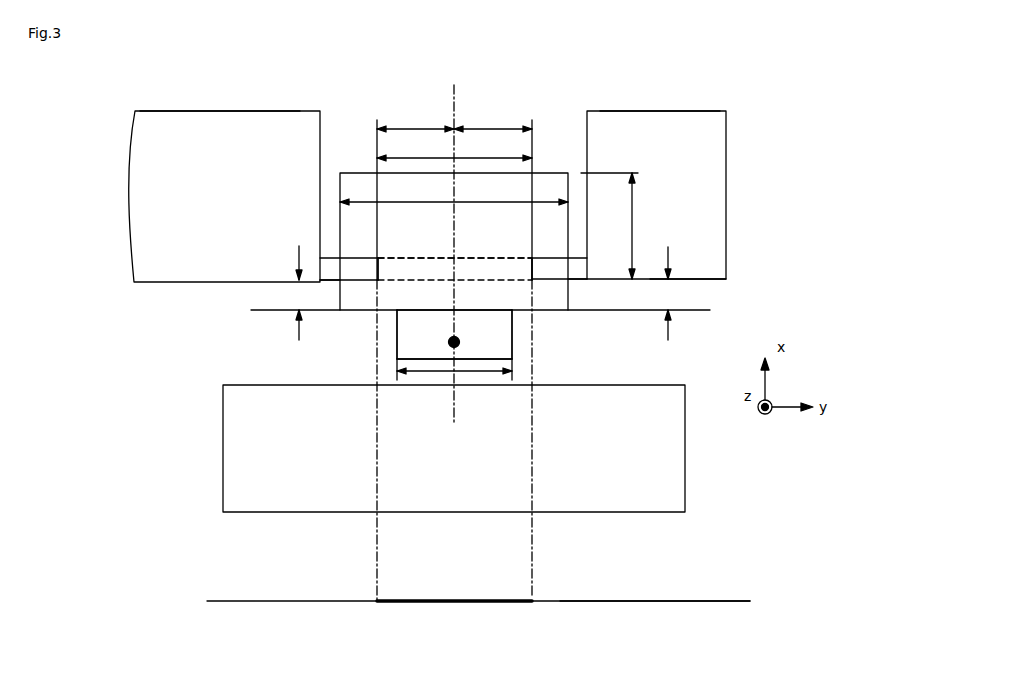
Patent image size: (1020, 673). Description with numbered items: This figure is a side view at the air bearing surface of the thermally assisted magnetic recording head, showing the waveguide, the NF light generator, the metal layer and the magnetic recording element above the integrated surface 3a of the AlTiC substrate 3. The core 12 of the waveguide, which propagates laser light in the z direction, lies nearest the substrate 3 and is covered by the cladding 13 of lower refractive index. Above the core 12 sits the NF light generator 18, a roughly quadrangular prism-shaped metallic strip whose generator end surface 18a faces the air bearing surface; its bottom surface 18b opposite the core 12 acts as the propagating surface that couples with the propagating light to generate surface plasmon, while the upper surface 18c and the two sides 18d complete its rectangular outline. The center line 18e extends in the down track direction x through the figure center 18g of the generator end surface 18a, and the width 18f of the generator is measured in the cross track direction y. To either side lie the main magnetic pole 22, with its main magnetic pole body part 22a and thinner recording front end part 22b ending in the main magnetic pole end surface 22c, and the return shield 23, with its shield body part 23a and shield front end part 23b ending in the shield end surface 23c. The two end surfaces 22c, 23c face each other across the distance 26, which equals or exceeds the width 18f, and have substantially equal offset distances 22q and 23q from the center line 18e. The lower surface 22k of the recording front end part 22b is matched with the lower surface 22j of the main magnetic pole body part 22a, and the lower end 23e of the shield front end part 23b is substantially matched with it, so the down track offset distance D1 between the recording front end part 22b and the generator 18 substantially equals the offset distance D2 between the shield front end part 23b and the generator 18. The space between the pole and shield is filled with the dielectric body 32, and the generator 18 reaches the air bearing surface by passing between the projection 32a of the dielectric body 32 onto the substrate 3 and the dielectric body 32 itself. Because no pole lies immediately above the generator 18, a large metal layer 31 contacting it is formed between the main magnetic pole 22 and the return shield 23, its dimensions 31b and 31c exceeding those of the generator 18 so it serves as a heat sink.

The cladding 13 is at (349, 33).
The return shield 23 is at (228, 86).
The shield body part 23a is at (164, 124).
The main magnetic pole 22 is at (698, 84).
The main magnetic pole body part 22a is at (636, 122).
The center line 18e is at (454, 242).
The offset distance of shield end surface 23q is at (415, 120).
The offset distance of main magnetic pole end surface 22q is at (493, 120).
The distance between main magnetic pole end surface and shield end surface 26 is at (454, 150).
The metal layer 31 is at (372, 180).
The dimension of metal layer 31c is at (454, 194).
The dimension of metal layer 31b is at (609, 226).
The shield front end part 23b is at (352, 270).
The recording front end part 22b is at (543, 271).
The shield end surface 23c is at (378, 272).
The main magnetic pole end surface 22c is at (532, 272).
The lower end of shield front end part 23e is at (331, 282).
The dielectric body 32 is at (461, 264).
The lower surface of recording front end part 22k is at (577, 281).
The lower surface of main magnetic pole body part 22j is at (683, 281).
The offset distance between shield front end part and NF light generator D2 is at (304, 294).
The offset distance between recording front end part and NF light generator D1 is at (678, 293).
The NF light generator 18 is at (502, 318).
The generator end surface 18a is at (423, 320).
The upper surface 18c is at (473, 310).
The sides 18d is at (397, 357).
The bottom surface 18b is at (470, 360).
The figure center of generator end surface 18g is at (454, 336).
The width of NF light generator 18f is at (454, 373).
The core 12 is at (685, 449).
The substrate 3 is at (494, 638).
The integrated surface 3a is at (647, 598).
The projection of dielectric body 32a is at (490, 598).